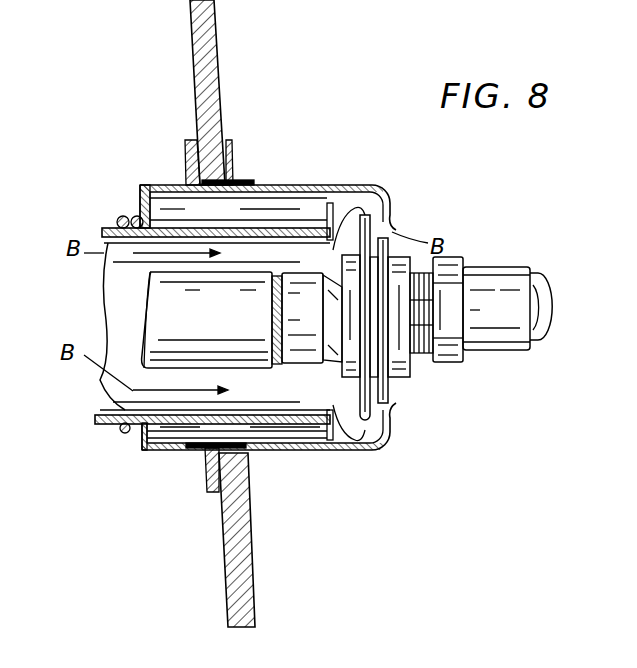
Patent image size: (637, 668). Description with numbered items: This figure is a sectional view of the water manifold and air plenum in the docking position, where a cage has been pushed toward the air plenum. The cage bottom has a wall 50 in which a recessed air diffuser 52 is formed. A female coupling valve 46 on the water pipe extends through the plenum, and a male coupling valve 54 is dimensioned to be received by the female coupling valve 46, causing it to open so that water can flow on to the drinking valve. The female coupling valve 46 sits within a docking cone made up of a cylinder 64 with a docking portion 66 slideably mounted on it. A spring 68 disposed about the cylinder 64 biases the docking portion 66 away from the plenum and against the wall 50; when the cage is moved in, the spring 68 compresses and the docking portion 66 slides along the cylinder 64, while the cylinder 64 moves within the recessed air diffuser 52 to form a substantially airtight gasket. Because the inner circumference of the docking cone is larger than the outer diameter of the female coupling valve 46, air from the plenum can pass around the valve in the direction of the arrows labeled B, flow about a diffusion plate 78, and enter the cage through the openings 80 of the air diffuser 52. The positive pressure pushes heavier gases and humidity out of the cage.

The wall 50 is at (222, 70).
The recessed air diffuser 52 is at (283, 218).
The male coupling valve 54 is at (322, 312).
The female coupling valve 46 is at (162, 302).
The cylinder 64 is at (200, 223).
The docking portion 66 is at (160, 450).
The spring 68 is at (122, 219).
The diffusion plate 78 is at (357, 397).
The openings 80 is at (395, 226).